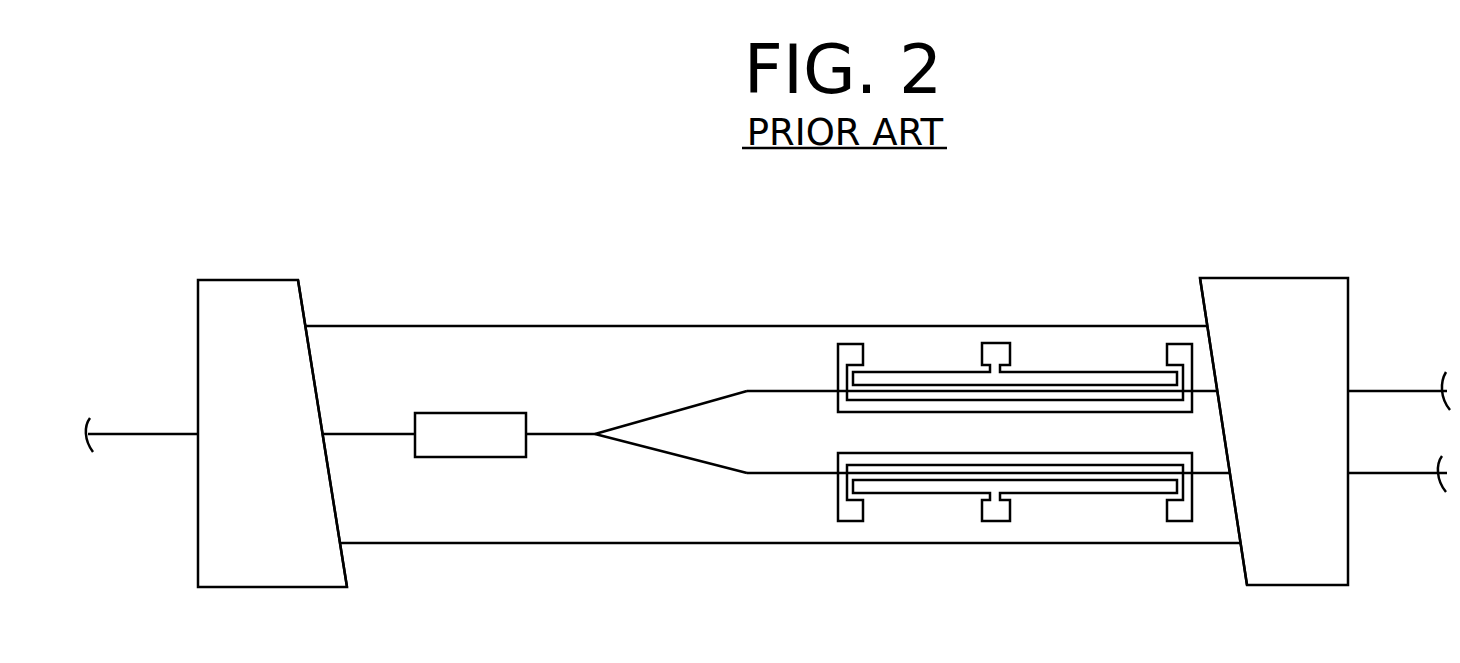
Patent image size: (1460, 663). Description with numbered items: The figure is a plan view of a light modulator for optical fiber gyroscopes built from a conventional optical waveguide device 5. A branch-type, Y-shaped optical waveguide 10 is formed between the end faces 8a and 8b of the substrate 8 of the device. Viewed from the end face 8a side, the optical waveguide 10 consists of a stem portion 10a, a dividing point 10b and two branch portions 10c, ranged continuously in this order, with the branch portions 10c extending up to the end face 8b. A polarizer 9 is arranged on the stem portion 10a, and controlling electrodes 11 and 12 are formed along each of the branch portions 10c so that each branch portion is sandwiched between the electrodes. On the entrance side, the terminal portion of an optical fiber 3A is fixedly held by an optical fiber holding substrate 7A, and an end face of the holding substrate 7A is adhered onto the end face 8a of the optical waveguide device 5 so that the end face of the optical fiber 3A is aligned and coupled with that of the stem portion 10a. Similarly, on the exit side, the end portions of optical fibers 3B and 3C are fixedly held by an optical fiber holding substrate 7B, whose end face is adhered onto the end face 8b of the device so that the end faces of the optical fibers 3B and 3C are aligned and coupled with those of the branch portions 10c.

The optical fiber on the entrance side 3A is at (147, 433).
The optical fiber on the exit side 3B is at (1399, 389).
The optical fiber on the exit side 3C is at (1400, 476).
The optical waveguide device 5 is at (792, 315).
The optical fiber holding substrate 7A is at (265, 303).
The optical fiber holding substrate 7B is at (1288, 293).
The substrate 8 is at (578, 341).
The end face 8a is at (318, 402).
The end face 8b is at (1228, 432).
The polarizer 9 is at (465, 423).
The Y-shaped optical waveguide 10 is at (776, 437).
The stem portion 10a is at (542, 436).
The dividing point 10b is at (593, 436).
The branch portions 10c is at (815, 389).
The controlling electrode 11 is at (1028, 380).
The controlling electrode 12 is at (1115, 407).